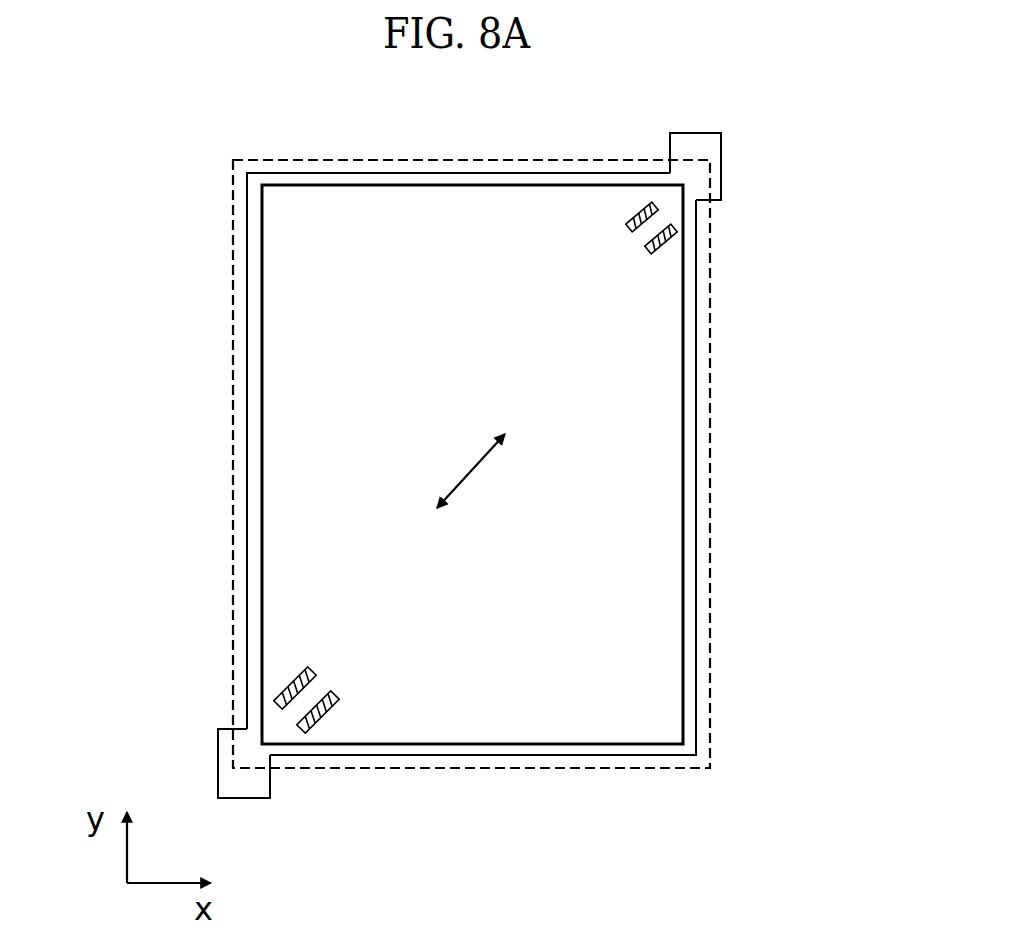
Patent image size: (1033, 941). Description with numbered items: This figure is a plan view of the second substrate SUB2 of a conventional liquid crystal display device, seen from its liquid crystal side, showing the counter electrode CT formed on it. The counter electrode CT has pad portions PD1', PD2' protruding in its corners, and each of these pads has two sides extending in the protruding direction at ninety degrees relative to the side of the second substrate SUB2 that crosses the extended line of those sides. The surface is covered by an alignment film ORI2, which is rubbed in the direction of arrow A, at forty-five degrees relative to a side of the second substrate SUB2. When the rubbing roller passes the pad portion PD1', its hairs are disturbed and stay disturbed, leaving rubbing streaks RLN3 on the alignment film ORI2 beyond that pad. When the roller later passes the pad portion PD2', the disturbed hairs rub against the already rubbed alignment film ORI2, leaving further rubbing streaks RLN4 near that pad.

The second substrate SUB2 is at (710, 640).
The alignment film ORI2 is at (262, 490).
The counter electrode CT is at (690, 450).
The pad portion PD1' is at (775, 164).
The pad portion PD2' is at (146, 763).
The rubbing streaks RLN3 is at (634, 212).
The rubbing streaks RLN4 is at (297, 676).
The arrow A is at (471, 468).